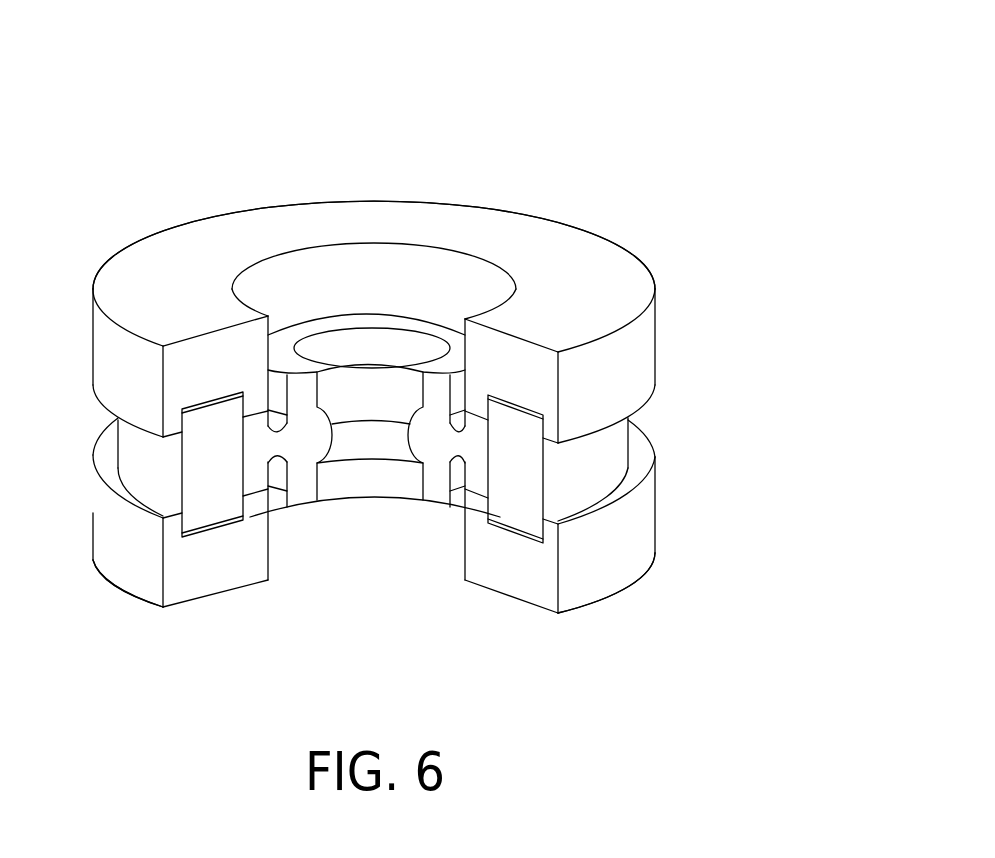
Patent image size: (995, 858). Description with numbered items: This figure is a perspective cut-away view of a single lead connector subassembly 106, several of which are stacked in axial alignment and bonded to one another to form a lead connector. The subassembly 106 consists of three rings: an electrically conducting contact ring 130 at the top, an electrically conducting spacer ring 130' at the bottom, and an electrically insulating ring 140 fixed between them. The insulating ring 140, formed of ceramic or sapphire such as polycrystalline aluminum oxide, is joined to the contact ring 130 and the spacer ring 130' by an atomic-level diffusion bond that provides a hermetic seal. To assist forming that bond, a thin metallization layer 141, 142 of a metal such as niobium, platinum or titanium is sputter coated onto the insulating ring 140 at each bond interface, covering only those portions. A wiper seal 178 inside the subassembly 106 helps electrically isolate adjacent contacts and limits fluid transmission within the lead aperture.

The lead connector subassembly 106 is at (387, 112).
The electrically conducting contact ring 130 is at (426, 302).
The electrically conducting spacer ring 130' is at (433, 530).
The electrically insulating ring 140 is at (582, 463).
The metallization layer 141 is at (223, 398).
The metallization layer 142 is at (223, 522).
The wiper seal 178 is at (315, 445).